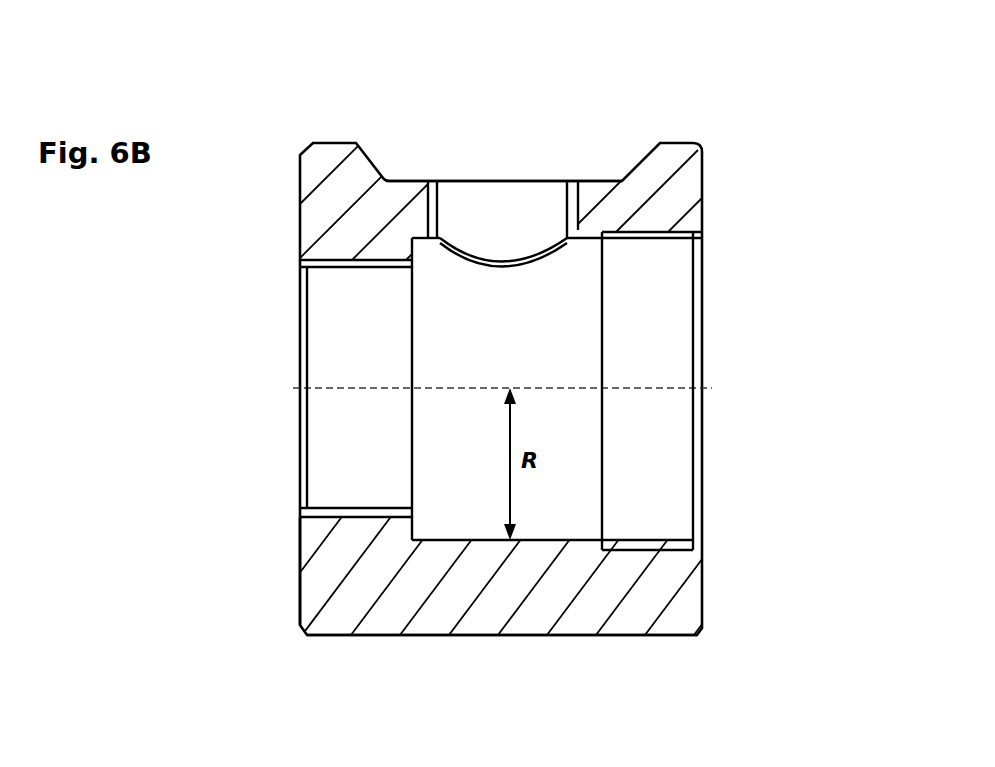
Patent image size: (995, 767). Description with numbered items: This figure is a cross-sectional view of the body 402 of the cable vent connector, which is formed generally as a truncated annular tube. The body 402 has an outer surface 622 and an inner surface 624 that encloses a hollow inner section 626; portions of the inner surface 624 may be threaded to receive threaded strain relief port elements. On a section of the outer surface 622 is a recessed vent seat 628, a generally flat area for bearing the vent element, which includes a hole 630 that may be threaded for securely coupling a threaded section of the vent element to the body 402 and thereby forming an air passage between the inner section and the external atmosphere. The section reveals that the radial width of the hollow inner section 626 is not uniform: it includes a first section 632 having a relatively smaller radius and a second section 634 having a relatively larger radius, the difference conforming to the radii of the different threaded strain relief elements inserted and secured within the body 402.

The body 402 is at (618, 592).
The outer surface 622 is at (620, 635).
The inner surface 624 is at (413, 625).
The hollow inner section 626 is at (286, 410).
The vent seat 628 is at (448, 162).
The hole 630 is at (485, 220).
The first section 632 is at (330, 443).
The second section 634 is at (582, 435).